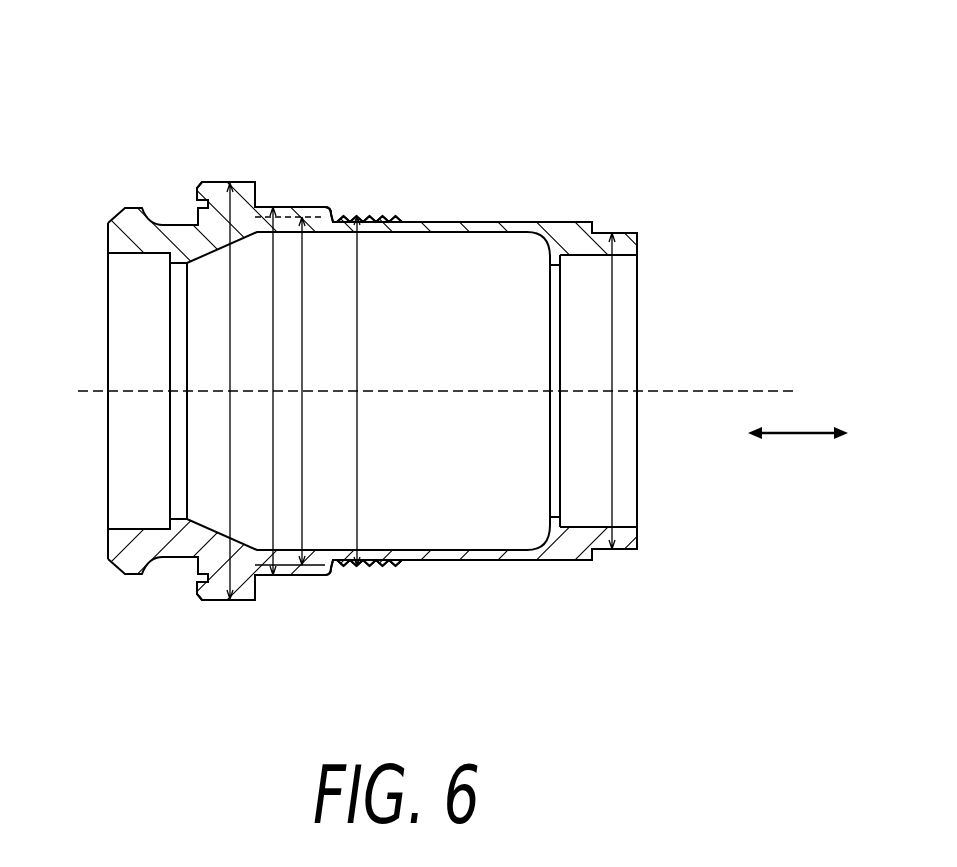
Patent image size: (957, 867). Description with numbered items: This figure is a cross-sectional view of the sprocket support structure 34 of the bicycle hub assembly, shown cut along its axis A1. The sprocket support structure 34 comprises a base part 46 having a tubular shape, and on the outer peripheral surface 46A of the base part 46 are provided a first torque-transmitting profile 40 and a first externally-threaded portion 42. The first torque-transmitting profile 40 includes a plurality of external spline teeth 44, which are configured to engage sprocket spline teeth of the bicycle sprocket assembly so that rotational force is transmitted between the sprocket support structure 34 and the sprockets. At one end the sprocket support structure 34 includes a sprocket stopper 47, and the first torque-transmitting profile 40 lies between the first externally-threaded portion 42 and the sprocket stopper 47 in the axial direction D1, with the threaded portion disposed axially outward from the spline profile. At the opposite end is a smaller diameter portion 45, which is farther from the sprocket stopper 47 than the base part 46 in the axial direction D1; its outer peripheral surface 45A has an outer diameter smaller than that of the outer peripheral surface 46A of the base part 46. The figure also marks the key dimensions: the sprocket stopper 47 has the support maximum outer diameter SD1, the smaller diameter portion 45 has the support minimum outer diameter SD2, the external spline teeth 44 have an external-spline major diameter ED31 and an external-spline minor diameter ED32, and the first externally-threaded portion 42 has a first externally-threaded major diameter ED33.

The sprocket support structure 34 is at (455, 103).
The first torque-transmitting profile 40 is at (341, 148).
The first externally-threaded portion 42 is at (372, 212).
The external spline tooth 44 is at (288, 207).
The smaller diameter portion 45 is at (628, 235).
The outer peripheral surface 45A is at (597, 233).
The base part 46 is at (478, 220).
The outer peripheral surface 46A is at (508, 222).
The sprocket stopper 47 is at (217, 182).
The rotational center axis A1 is at (770, 392).
The axial direction D1 is at (798, 449).
The support maximum outer diameter SD1 is at (196, 568).
The support minimum outer diameter SD2 is at (612, 498).
The external-spline major diameter ED31 is at (273, 528).
The external-spline minor diameter ED32 is at (302, 515).
The first externally-threaded major diameter ED33 is at (357, 515).